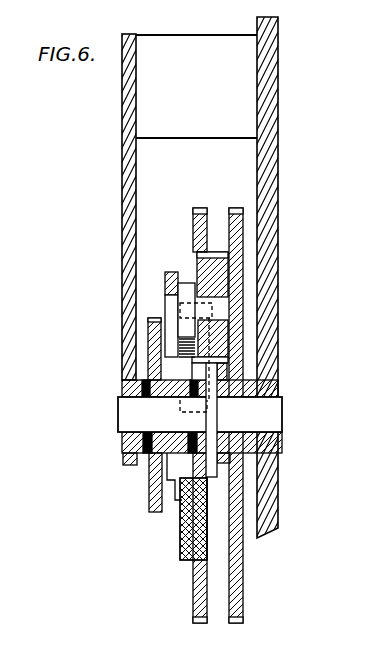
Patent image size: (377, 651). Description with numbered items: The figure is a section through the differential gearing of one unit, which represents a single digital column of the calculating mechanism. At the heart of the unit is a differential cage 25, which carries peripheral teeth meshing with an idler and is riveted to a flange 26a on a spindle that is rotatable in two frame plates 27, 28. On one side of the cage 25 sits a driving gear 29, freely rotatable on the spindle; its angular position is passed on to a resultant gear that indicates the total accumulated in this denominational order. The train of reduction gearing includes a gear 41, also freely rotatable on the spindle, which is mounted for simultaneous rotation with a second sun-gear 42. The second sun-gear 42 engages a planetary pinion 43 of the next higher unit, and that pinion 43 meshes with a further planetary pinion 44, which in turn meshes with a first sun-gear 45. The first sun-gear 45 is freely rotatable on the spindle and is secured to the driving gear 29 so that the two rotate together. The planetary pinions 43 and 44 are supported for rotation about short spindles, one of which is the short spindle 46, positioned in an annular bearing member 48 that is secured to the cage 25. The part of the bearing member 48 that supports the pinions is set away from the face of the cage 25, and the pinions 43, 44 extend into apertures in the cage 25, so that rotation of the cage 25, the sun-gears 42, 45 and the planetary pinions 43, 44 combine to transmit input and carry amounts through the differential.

The differential cage 25 is at (196, 590).
The flange 26a is at (208, 428).
The frame plate 27 is at (270, 140).
The frame plate 28 is at (128, 123).
The driving gear 29 is at (150, 489).
The gear 41 is at (238, 603).
The second sun-gear 42 is at (247, 449).
The planetary pinion 43 is at (223, 338).
The planetary pinion 44 is at (178, 337).
The first sun-gear 45 is at (123, 449).
The short spindle 46 is at (213, 308).
The annular bearing member 48 is at (168, 273).